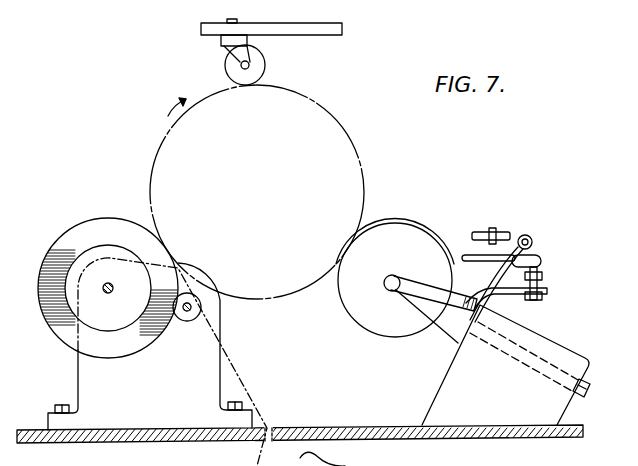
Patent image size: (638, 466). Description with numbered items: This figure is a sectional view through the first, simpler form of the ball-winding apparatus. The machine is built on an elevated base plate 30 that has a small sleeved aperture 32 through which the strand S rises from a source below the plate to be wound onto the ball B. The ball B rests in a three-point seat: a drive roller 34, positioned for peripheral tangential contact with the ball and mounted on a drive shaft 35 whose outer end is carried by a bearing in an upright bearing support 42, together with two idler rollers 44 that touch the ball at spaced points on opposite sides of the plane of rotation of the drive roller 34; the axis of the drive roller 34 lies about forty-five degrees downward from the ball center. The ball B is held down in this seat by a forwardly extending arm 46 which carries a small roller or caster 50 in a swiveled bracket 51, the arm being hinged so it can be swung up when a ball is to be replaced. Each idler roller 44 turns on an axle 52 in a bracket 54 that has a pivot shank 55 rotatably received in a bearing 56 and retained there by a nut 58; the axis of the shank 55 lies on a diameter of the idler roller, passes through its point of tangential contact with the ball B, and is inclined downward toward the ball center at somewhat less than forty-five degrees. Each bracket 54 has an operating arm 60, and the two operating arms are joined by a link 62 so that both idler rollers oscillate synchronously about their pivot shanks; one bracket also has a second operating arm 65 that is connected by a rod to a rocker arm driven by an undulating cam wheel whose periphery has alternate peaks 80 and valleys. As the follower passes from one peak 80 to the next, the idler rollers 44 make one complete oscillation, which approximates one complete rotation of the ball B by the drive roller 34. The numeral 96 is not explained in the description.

The base plate 30 is at (376, 426).
The sleeved aperture 32 is at (273, 428).
The ball B is at (340, 124).
The arm 46 is at (323, 35).
The swiveled bracket 51 is at (221, 47).
The roller or caster 50 is at (234, 72).
The drive roller 34 is at (90, 226).
The drive shaft 35 is at (108, 294).
The upright bearing support 42 is at (88, 376).
The roller 96 is at (185, 320).
The strand S is at (238, 373).
The peaks 80 is at (310, 459).
The idler roller 44 is at (399, 223).
The axle 52 is at (386, 289).
The bracket 54 is at (451, 325).
The bearing 56 is at (565, 400).
The pivot shank 55 is at (553, 362).
The nut 58 is at (592, 386).
The second operating arm 65 is at (521, 298).
The operating arm 60 is at (463, 257).
The link 62 is at (478, 231).